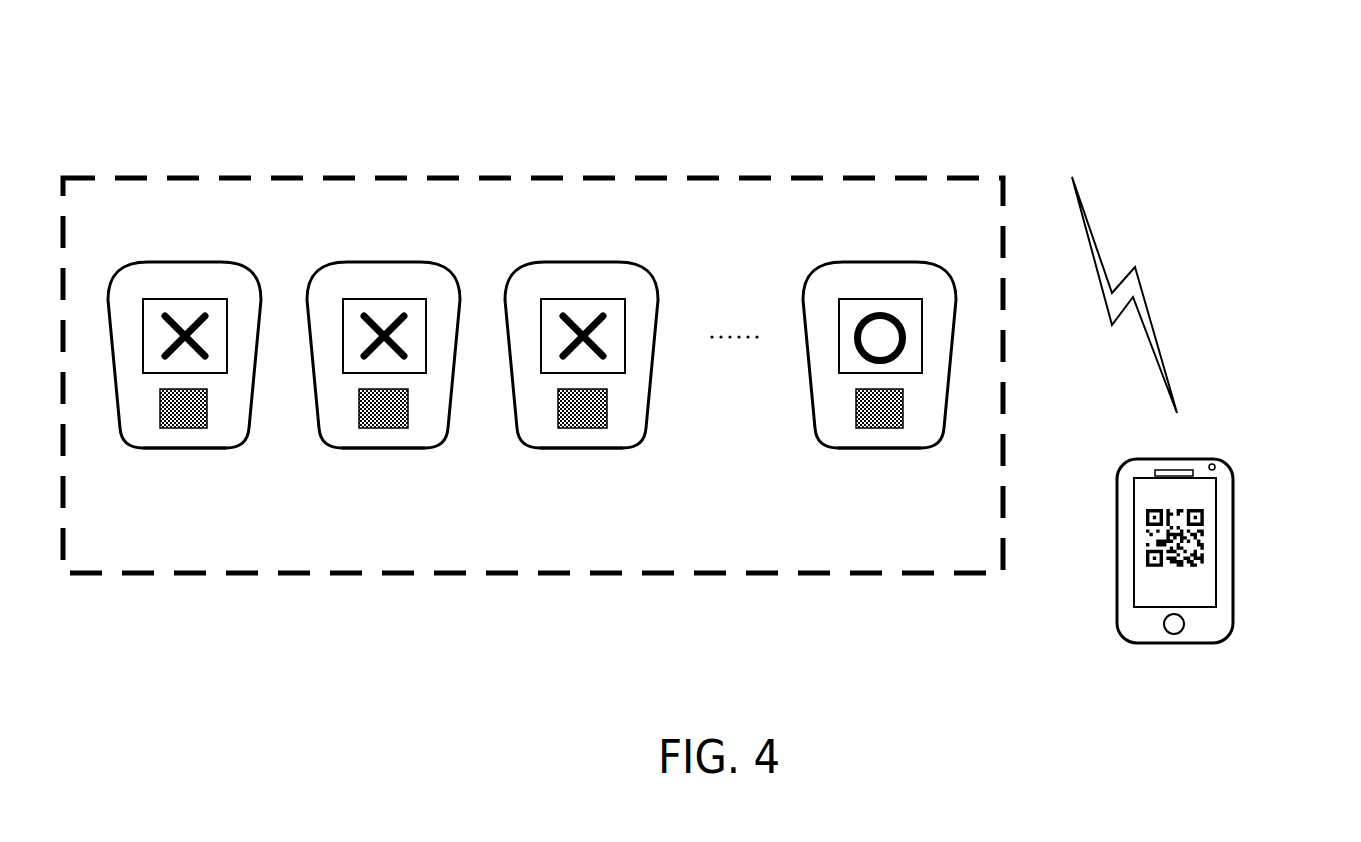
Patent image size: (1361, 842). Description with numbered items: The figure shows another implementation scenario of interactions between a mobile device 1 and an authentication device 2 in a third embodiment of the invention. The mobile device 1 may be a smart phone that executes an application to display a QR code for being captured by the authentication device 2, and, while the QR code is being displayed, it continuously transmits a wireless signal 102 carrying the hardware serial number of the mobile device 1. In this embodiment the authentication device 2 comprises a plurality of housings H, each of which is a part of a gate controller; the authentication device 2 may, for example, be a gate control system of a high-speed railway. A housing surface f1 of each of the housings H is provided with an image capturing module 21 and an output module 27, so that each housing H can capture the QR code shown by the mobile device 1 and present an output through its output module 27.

The authentication device 2 is at (825, 141).
The housing surface f1 is at (134, 282).
The output module 27 is at (227, 345).
The image capturing module 21 is at (188, 430).
The housing H is at (167, 450).
The wireless signal 102 is at (1151, 322).
The mobile device 1 is at (1213, 437).